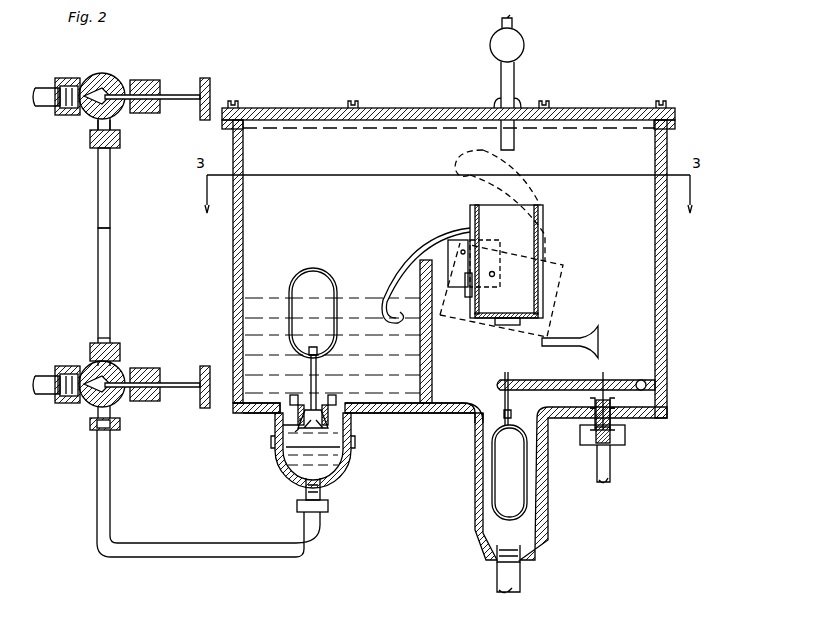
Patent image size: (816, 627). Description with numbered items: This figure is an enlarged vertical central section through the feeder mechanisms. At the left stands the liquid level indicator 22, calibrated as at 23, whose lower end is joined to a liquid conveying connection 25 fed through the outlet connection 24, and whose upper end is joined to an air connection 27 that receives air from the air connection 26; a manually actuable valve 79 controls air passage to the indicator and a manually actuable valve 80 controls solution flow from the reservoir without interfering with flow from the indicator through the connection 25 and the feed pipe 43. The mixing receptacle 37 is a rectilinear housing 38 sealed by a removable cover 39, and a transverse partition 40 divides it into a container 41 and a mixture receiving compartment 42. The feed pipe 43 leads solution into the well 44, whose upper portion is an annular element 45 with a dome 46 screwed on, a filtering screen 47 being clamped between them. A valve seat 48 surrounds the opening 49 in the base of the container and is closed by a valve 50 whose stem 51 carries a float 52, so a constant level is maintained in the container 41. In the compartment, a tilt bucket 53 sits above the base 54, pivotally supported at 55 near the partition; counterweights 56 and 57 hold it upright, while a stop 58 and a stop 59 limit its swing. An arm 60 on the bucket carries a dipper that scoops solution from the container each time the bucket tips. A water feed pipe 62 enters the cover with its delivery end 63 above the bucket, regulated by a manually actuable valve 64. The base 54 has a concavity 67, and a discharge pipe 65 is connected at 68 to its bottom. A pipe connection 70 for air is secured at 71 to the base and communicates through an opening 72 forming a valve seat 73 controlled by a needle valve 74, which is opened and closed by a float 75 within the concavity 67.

The liquid level indicator 22 is at (110, 256).
The calibration 23 is at (110, 193).
The outlet connection 24 is at (50, 398).
The liquid conveying connection 25 is at (110, 372).
The air connection 26 is at (50, 110).
The air connection 27 is at (110, 124).
The mixing receptacle 37 is at (667, 310).
The housing 38 is at (667, 272).
The cover 39 is at (590, 108).
The partition 40 is at (432, 336).
The container 41 is at (404, 360).
The mixture receiving compartment 42 is at (570, 365).
The feed pipe 43 is at (110, 503).
The well 44 is at (355, 446).
The annular element 45 is at (351, 432).
The dome 46 is at (280, 478).
The filtering screen 47 is at (320, 450).
The valve seat 48 is at (290, 432).
The opening 49 is at (318, 425).
The valve 50 is at (285, 455).
The stem 51 is at (316, 372).
The float 52 is at (322, 270).
The tilt bucket 53 is at (543, 210).
The base 54 is at (458, 425).
The pivotal support 55 is at (495, 276).
The counterweight 56 is at (465, 292).
The counterweight 57 is at (506, 325).
The stop 58 is at (461, 252).
The stop 59 is at (598, 342).
The arm 60 is at (385, 290).
The water feed pipe 62 is at (514, 70).
The delivery end 63 is at (512, 150).
The manually actuable valve 64 is at (518, 40).
The discharge pipe 65 is at (518, 576).
The concavity 67 is at (550, 525).
The connection 68 is at (497, 556).
The pipe connection 70 is at (610, 468).
The securing point 71 is at (625, 436).
The opening 72 is at (612, 405).
The valve seat 73 is at (592, 433).
The needle valve 74 is at (596, 405).
The float 75 is at (527, 483).
The manually actuable valve 79 is at (110, 88).
The manually actuable valve 80 is at (92, 422).